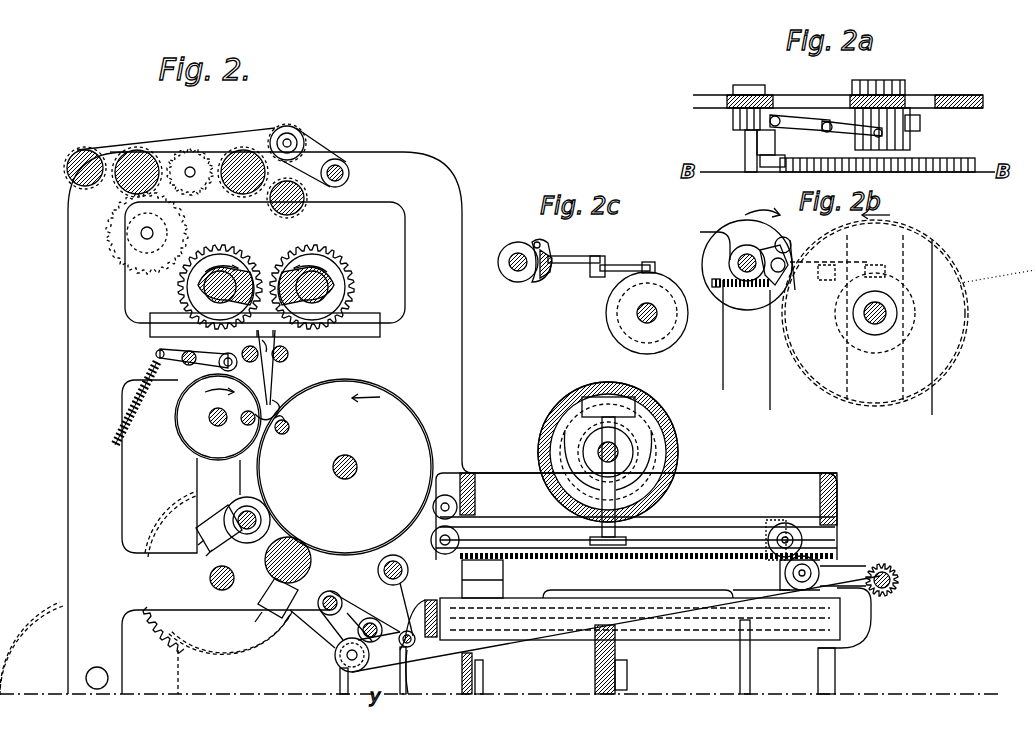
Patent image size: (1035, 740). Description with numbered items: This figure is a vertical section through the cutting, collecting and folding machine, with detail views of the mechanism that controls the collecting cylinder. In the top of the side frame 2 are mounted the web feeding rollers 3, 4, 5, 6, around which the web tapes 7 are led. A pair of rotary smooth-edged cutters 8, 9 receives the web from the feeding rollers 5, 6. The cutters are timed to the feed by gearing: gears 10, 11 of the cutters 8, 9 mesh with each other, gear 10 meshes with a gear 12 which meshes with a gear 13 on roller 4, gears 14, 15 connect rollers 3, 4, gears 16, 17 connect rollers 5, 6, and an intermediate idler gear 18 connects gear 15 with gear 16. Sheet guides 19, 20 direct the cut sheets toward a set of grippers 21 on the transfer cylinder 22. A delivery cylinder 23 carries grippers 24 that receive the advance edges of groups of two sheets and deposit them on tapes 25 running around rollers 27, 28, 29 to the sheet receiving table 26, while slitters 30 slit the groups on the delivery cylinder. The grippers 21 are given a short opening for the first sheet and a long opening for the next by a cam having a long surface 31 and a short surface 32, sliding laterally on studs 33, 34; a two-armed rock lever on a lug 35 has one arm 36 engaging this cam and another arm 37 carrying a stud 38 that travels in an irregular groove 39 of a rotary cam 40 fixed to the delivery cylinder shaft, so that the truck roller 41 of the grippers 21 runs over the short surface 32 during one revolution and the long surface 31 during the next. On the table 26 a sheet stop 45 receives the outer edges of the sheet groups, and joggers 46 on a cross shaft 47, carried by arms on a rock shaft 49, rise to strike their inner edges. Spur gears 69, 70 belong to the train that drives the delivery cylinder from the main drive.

In FIG. 2, the side frame 2 is at (500, 423).
In FIG. 2, the web feeding roller 3 is at (72, 180).
In FIG. 2, the web feeding roller 4 is at (137, 150).
In FIG. 2, the web feeding roller 5 is at (243, 150).
In FIG. 2, the web feeding roller 6 is at (306, 206).
In FIG. 2, the web tapes 7 is at (287, 126).
In FIG. 2, the rotary smooth-edged cutter 8 is at (185, 312).
In FIG. 2, the rotary smooth-edged cutter 9 is at (346, 312).
In FIG. 2, the gear 10 is at (243, 264).
In FIG. 2, the gear 11 is at (337, 264).
In FIG. 2, the gear 12 is at (145, 265).
In FIG. 2, the gear 13 is at (127, 212).
In FIG. 2, the gear 14 is at (66, 166).
In FIG. 2, the gear 15 is at (124, 152).
In FIG. 2, the gear 16 is at (257, 147).
In FIG. 2, the gear 17 is at (264, 212).
In FIG. 2, the intermediate idler gear 18 is at (190, 150).
In FIG. 2, the sheet guide 19 is at (284, 349).
In FIG. 2, the sheet guide 20 is at (281, 370).
In FIG. 2, the grippers 21 is at (241, 426).
In FIG. 2, the transfer cylinder 22 is at (177, 440).
In FIG. 2B, the transfer cylinder 22 is at (738, 312).
In FIG. 2, the delivery cylinder 23 is at (380, 450).
In FIG. 2B, the delivery cylinder 23 is at (875, 324).
In FIG. 2, the grippers 24 is at (291, 426).
In FIG. 2, the tapes 25 is at (382, 594).
In FIG. 2, the sheet receiving table 26 is at (570, 556).
In FIG. 2, the roller 27 is at (311, 561).
In FIG. 2, the roller 28 is at (338, 664).
In FIG. 2, the roller 29 is at (815, 566).
In FIG. 2, the slitter 30 is at (238, 505).
In FIG. 2A, the long surface 31 is at (742, 126).
In FIG. 2C, the long surface 31 is at (542, 272).
In FIG. 2A, the short surface 32 is at (747, 146).
In FIG. 2C, the short surface 32 is at (549, 252).
In FIG. 2B, the short surface 32 is at (777, 247).
In FIG. 2A, the stud 33 is at (735, 96).
In FIG. 2C, the stud 33 is at (540, 243).
In FIG. 2C, the stud 34 is at (532, 277).
In FIG. 2A, the lug 35 is at (826, 121).
In FIG. 2C, the lug 35 is at (596, 279).
In FIG. 2A, the arm 36 is at (795, 117).
In FIG. 2C, the arm 36 is at (574, 250).
In FIG. 2A, the arm 37 is at (862, 124).
In FIG. 2C, the arm 37 is at (625, 256).
In FIG. 2A, the stud 38 is at (922, 134).
In FIG. 2C, the stud 38 is at (652, 262).
In FIG. 2A, the irregular groove 39 is at (920, 124).
In FIG. 2C, the irregular groove 39 is at (616, 324).
In FIG. 2A, the rotary cam 40 is at (916, 128).
In FIG. 2C, the rotary cam 40 is at (664, 346).
In FIG. 2B, the truck roller 41 is at (788, 242).
In FIG. 2, the sheet stop 45 is at (770, 535).
In FIG. 2, the jogger 46 is at (620, 627).
In FIG. 2, the cross shaft 47 is at (407, 690).
In FIG. 2, the rock shaft 49 is at (370, 625).
In FIG. 2, the spur gear 69 is at (76, 648).
In FIG. 2, the spur gear 70 is at (217, 592).